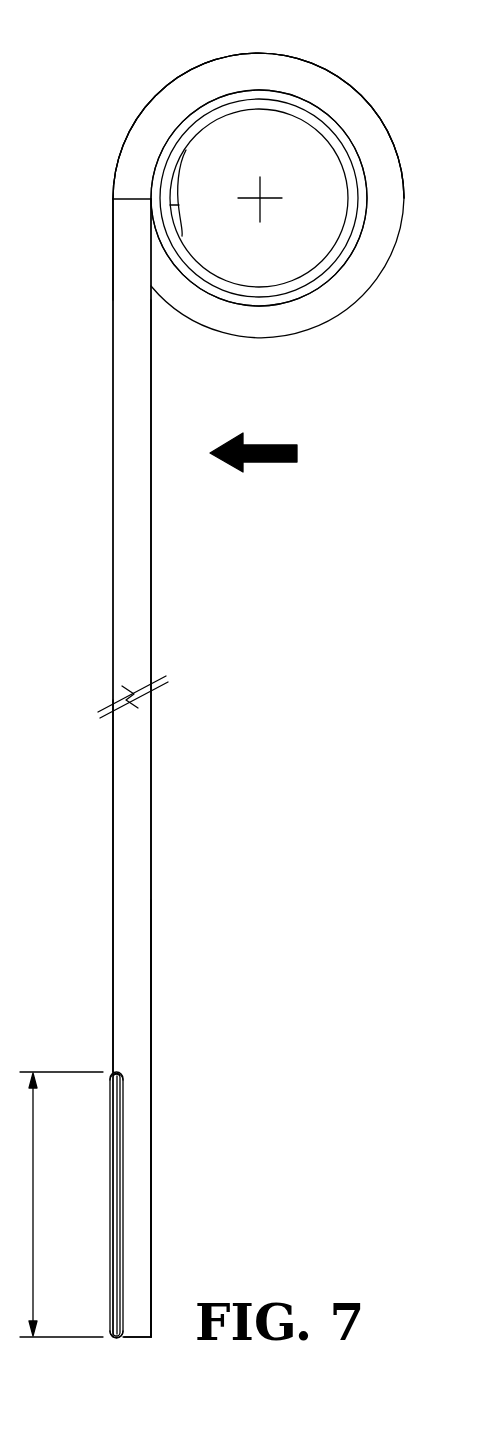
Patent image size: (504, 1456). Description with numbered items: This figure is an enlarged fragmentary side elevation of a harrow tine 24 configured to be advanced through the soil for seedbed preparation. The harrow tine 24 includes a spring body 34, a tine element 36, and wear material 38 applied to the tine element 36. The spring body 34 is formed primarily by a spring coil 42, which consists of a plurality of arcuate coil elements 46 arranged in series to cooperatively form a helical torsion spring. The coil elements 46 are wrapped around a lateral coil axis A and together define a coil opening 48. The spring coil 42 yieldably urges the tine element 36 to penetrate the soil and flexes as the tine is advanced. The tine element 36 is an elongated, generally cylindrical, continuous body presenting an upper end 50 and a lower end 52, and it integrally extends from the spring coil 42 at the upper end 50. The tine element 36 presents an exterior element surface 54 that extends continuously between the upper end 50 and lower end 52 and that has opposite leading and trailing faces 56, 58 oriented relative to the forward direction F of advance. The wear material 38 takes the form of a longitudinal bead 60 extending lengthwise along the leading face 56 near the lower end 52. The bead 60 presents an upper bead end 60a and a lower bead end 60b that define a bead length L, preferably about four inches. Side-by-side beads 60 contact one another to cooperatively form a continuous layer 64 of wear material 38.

The harrow tine 24 is at (122, 58).
The spring body 34 is at (302, 328).
The tine element 36 is at (122, 523).
The wear material 38 is at (112, 1195).
The spring coil 42 is at (333, 307).
The arcuate coil element 46 is at (304, 68).
The coil opening 48 is at (283, 117).
The upper end 50 is at (92, 250).
The lower end 52 is at (138, 1338).
The exterior element surface 54 is at (145, 790).
The leading face 56 is at (125, 948).
The trailing face 58 is at (152, 1003).
The longitudinal bead 60 is at (112, 1137).
The upper bead end 60a is at (115, 1073).
The lower bead end 60b is at (115, 1338).
The continuous layer 64 is at (112, 1255).
The lateral coil axis A is at (263, 197).
The forward direction F is at (263, 443).
The bead length L is at (58, 1204).